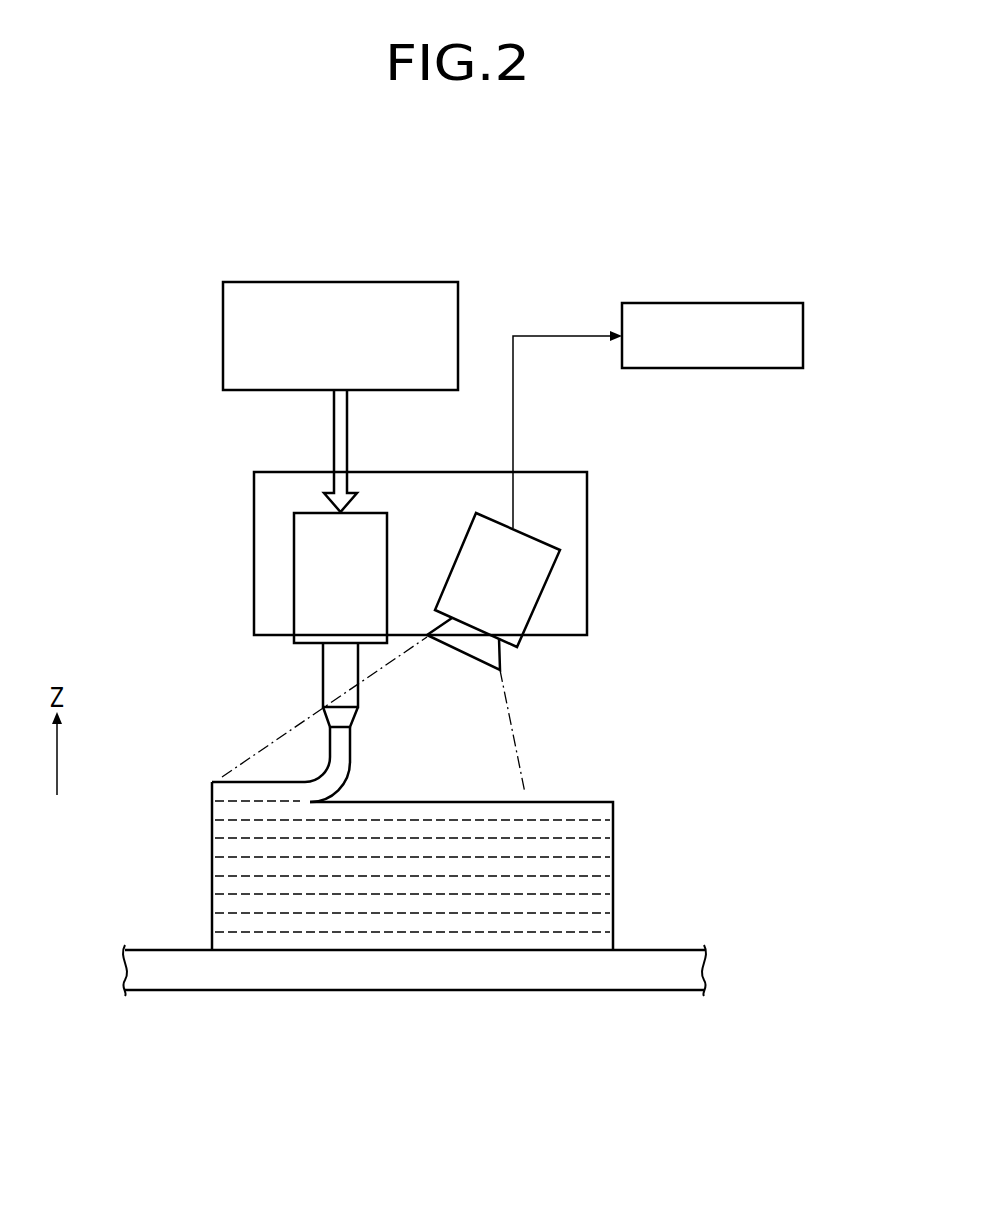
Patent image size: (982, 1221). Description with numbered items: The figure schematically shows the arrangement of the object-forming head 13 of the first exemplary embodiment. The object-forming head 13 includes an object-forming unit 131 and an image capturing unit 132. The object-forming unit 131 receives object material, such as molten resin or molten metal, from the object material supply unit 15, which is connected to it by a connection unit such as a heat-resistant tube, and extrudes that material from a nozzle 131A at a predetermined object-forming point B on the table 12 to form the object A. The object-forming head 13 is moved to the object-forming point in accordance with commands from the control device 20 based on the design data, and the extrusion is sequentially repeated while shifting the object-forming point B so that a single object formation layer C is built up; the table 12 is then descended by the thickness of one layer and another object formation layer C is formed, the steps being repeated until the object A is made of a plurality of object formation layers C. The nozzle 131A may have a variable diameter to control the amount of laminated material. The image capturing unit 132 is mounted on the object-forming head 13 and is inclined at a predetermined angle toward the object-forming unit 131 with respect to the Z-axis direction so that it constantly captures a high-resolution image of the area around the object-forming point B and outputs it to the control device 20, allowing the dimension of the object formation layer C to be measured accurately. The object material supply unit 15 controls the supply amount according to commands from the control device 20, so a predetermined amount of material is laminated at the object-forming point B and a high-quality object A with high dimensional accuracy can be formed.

The object material supply unit 15 is at (338, 282).
The control device 20 is at (708, 303).
The object-forming head 13 is at (254, 500).
The object-forming unit 131 is at (294, 557).
The nozzle 131A is at (323, 675).
The image capturing unit 132 is at (541, 592).
The table 12 is at (643, 982).
The object A is at (621, 786).
The object-forming point B is at (314, 764).
The object formation layer C is at (212, 792).